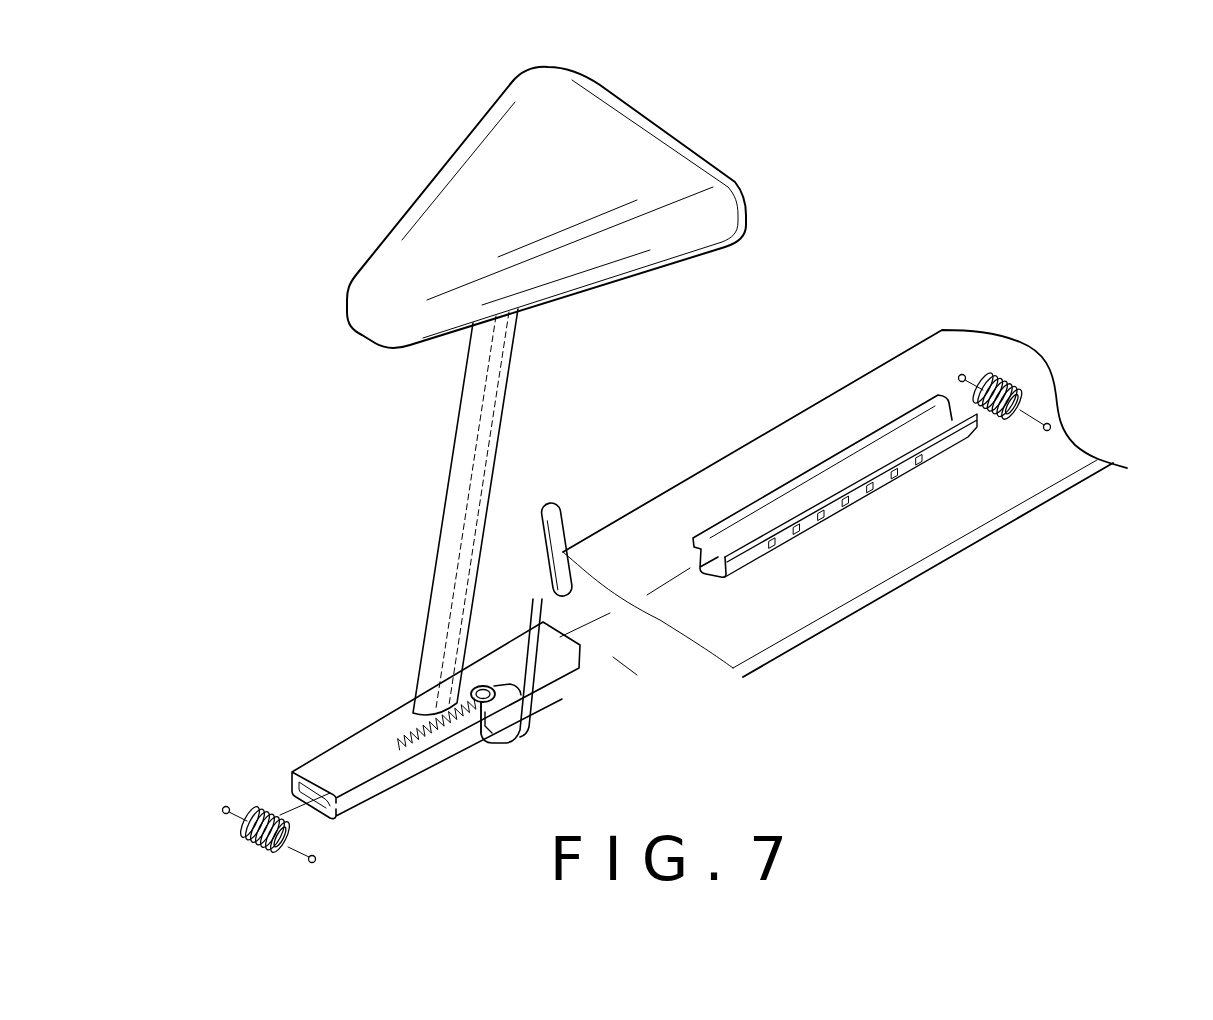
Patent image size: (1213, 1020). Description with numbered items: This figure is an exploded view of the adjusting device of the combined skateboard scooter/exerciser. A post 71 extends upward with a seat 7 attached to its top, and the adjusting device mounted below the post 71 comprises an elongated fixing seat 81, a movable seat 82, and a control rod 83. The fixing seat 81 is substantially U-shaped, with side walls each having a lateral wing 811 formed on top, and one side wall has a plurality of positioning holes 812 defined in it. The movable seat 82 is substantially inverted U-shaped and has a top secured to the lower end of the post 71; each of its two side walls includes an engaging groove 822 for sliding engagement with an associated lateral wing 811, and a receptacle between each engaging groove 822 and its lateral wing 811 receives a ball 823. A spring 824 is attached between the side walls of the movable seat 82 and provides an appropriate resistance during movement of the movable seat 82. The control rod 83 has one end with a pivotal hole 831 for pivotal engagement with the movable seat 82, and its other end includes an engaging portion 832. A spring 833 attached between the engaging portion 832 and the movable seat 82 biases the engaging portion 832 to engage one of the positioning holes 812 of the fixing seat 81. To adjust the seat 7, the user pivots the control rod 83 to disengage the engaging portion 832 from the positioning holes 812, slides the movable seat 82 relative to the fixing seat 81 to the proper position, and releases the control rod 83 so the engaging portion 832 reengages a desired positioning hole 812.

The seat 7 is at (608, 160).
The post 71 is at (480, 423).
The fixing seat 81 is at (843, 480).
The lateral wing 811 is at (748, 545).
The positioning holes 812 is at (877, 490).
The movable seat 82 is at (355, 742).
The engaging groove 822 is at (290, 775).
The ball 823 is at (222, 808).
The spring 824 is at (260, 810).
The control rod 83 is at (563, 658).
The pivotal hole 831 is at (497, 698).
The engaging portion 832 is at (483, 735).
The spring 833 is at (463, 725).